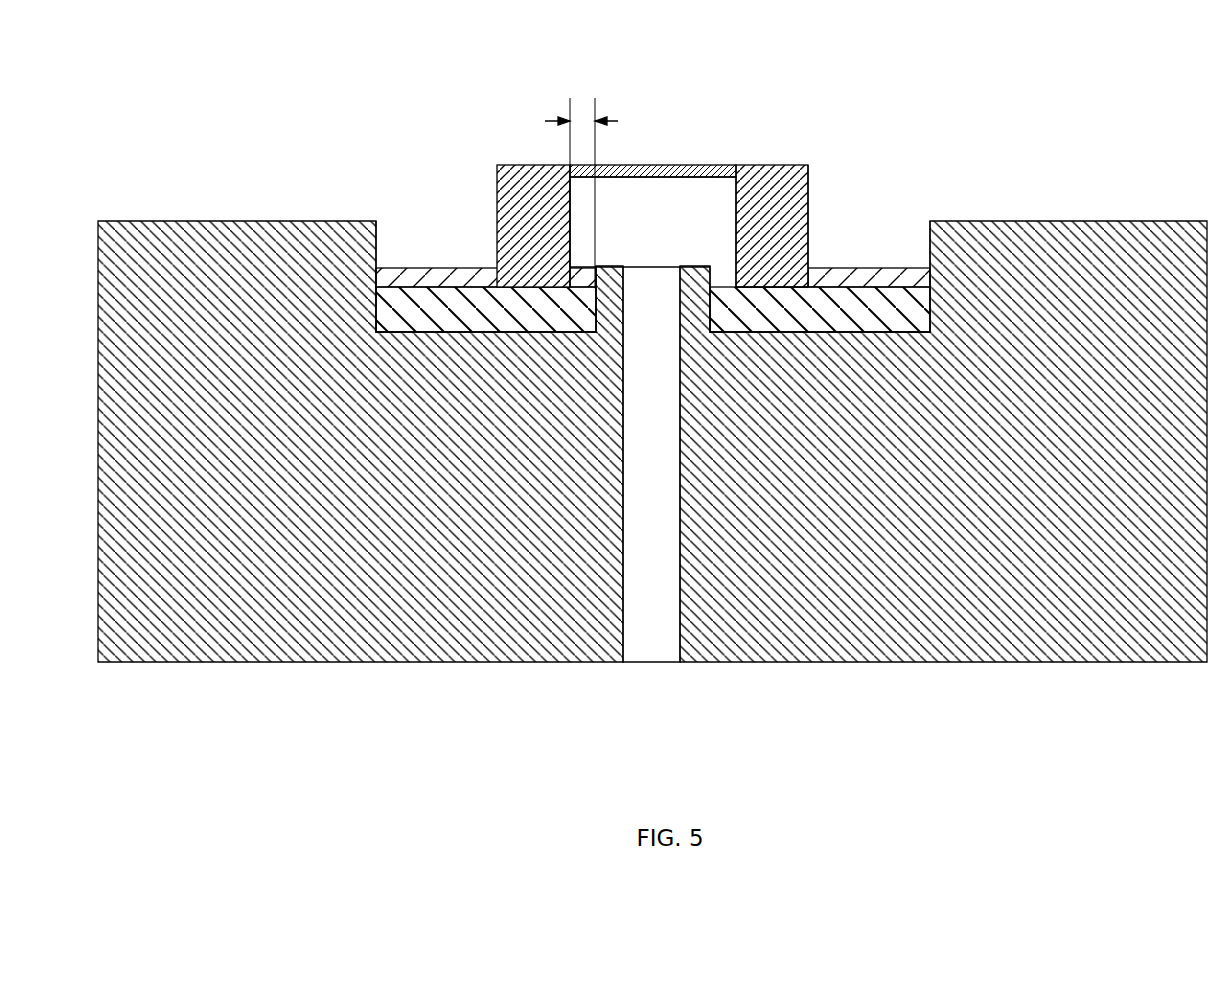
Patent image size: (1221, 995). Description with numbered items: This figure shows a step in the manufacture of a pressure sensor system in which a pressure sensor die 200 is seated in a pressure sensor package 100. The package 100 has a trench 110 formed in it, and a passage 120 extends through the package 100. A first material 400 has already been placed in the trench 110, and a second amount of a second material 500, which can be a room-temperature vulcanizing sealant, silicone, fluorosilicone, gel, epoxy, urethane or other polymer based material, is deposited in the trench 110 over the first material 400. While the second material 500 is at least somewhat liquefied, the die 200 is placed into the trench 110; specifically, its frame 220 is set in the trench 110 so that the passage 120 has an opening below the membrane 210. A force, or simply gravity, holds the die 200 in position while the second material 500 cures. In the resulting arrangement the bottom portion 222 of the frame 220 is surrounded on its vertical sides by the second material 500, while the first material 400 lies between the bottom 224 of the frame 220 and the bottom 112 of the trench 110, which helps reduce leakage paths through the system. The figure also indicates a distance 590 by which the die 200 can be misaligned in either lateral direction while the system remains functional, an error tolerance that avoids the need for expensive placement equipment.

The pressure sensor package 100 is at (152, 220).
The trench 110 is at (435, 313).
The bottom of trench 112 is at (879, 332).
The passage 120 is at (653, 637).
The pressure sensor die 200 is at (683, 165).
The membrane 210 is at (706, 165).
The frame 220 is at (780, 187).
The bottom portion of frame 222 is at (778, 285).
The bottom of frame 224 is at (755, 287).
The first material 400 is at (410, 303).
The second material 500 is at (476, 283).
The distance 590 is at (585, 120).